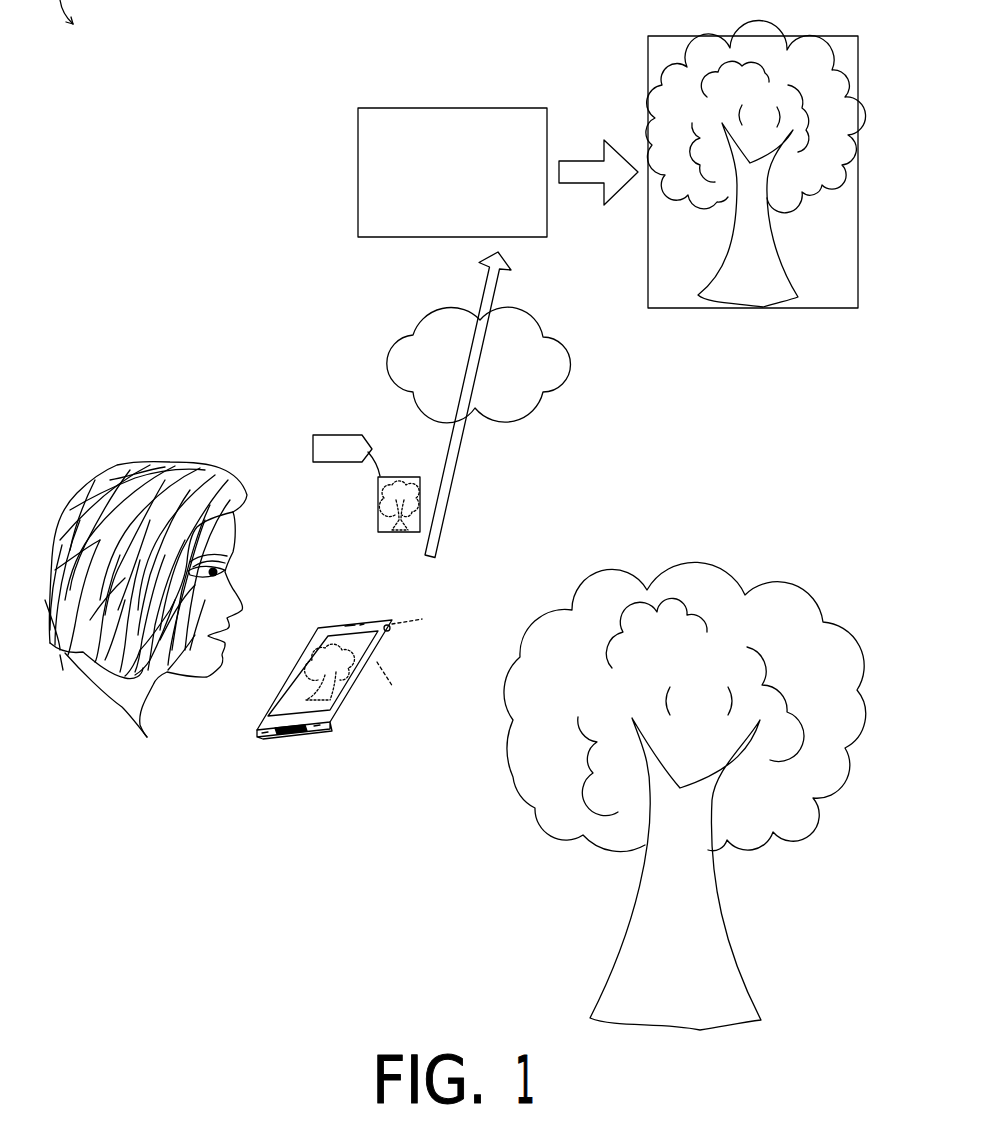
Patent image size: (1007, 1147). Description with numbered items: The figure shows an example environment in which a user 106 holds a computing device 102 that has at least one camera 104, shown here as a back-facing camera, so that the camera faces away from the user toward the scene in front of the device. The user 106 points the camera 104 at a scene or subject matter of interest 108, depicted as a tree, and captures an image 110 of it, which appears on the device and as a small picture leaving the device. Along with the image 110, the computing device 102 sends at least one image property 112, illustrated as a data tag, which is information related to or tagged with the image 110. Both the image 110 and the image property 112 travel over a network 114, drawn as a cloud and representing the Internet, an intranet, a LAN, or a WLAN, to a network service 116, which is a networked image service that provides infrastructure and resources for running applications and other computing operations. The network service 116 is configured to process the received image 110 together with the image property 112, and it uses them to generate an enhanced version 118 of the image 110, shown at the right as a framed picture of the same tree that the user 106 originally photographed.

The computing device 102 is at (338, 718).
The camera 104 is at (370, 628).
The user 106 is at (182, 440).
The subject matter of interest 108 is at (642, 544).
The image 110 is at (378, 515).
The image property 112 is at (336, 435).
The network 114 is at (424, 320).
The network service 116 is at (358, 142).
The enhanced version of the image 118 is at (648, 66).